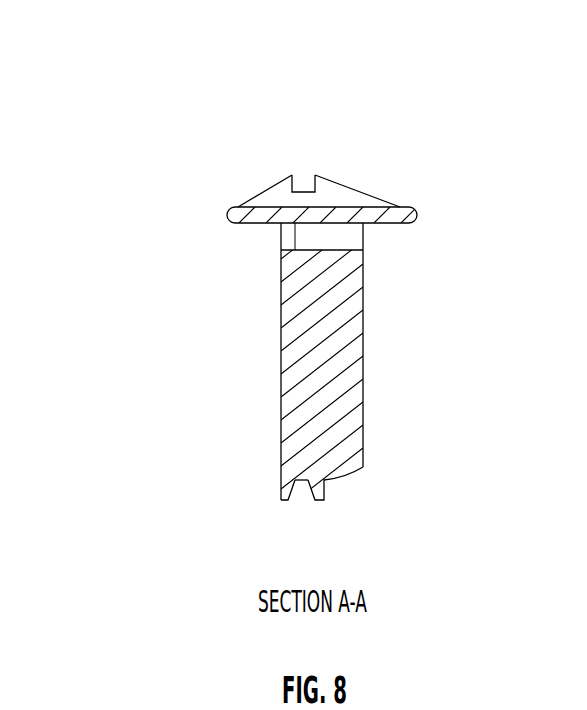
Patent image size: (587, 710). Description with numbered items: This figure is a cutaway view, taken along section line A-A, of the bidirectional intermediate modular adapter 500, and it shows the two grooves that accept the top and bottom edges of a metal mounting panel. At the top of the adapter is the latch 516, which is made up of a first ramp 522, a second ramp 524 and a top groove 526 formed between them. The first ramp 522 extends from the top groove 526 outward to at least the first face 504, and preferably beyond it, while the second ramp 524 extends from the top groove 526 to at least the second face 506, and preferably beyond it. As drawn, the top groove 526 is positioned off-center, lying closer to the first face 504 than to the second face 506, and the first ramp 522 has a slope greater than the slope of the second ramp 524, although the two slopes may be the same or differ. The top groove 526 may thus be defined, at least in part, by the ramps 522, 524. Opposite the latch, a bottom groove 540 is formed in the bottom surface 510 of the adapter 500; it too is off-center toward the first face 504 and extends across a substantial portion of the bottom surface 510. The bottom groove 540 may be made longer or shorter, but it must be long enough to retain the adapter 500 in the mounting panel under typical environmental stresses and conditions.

The bidirectional intermediate modular adapter 500 is at (105, 148).
The first face 504 is at (278, 348).
The second face 506 is at (367, 348).
The bottom surface 510 is at (345, 490).
The latch 516 is at (320, 130).
The first ramp 522 is at (245, 194).
The second ramp 524 is at (367, 187).
The top groove 526 is at (302, 168).
The bottom groove 540 is at (304, 482).